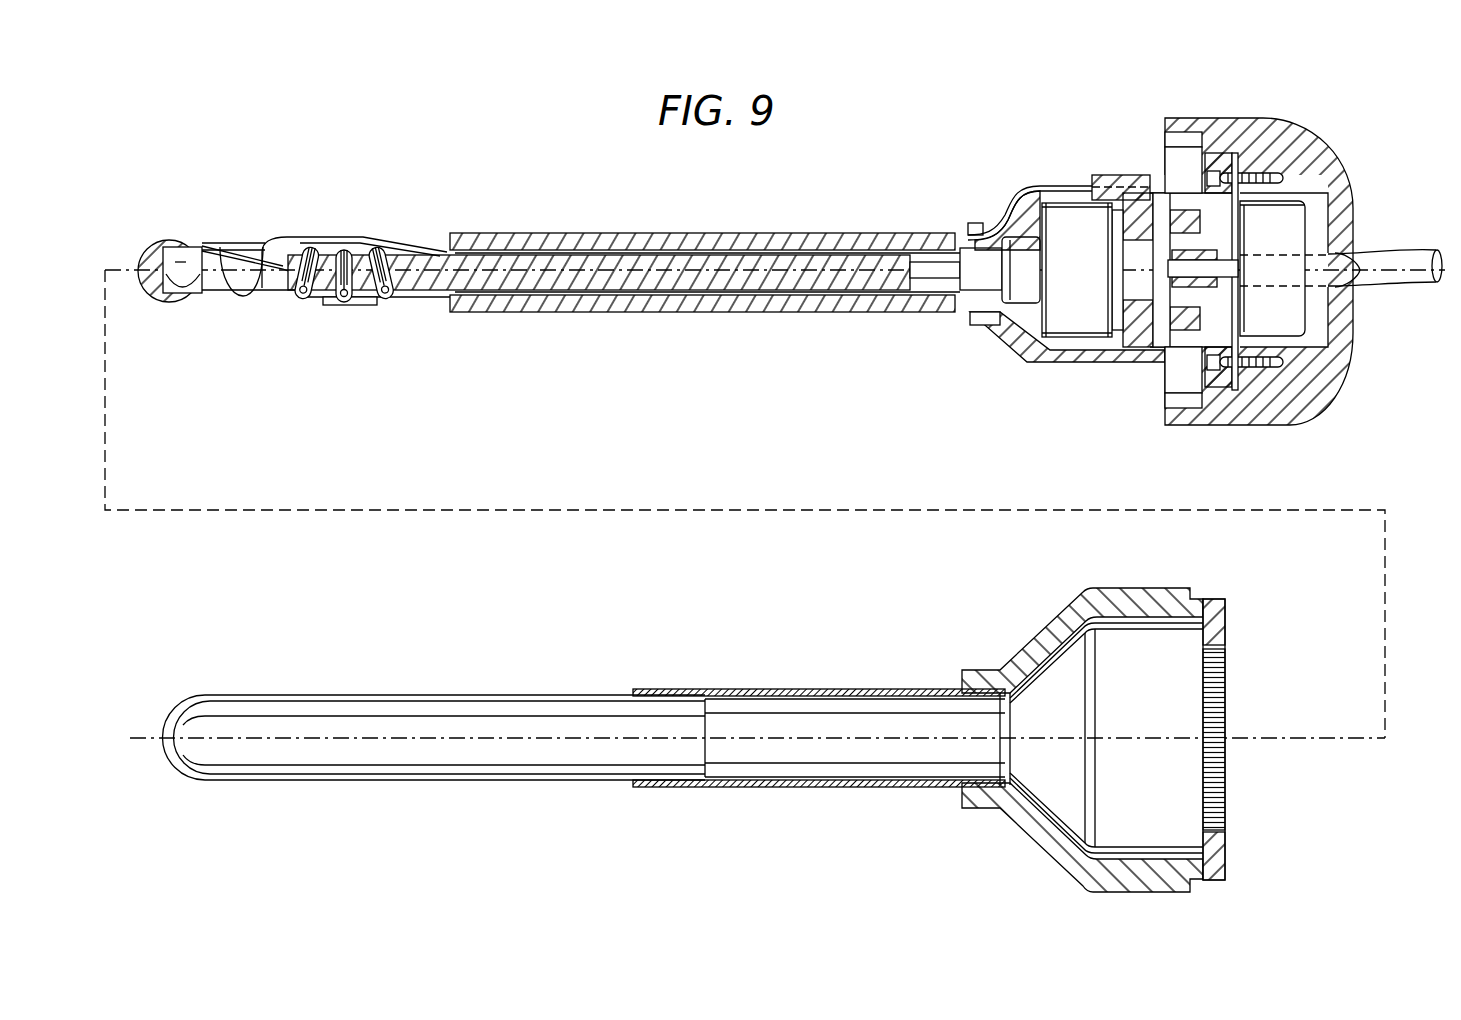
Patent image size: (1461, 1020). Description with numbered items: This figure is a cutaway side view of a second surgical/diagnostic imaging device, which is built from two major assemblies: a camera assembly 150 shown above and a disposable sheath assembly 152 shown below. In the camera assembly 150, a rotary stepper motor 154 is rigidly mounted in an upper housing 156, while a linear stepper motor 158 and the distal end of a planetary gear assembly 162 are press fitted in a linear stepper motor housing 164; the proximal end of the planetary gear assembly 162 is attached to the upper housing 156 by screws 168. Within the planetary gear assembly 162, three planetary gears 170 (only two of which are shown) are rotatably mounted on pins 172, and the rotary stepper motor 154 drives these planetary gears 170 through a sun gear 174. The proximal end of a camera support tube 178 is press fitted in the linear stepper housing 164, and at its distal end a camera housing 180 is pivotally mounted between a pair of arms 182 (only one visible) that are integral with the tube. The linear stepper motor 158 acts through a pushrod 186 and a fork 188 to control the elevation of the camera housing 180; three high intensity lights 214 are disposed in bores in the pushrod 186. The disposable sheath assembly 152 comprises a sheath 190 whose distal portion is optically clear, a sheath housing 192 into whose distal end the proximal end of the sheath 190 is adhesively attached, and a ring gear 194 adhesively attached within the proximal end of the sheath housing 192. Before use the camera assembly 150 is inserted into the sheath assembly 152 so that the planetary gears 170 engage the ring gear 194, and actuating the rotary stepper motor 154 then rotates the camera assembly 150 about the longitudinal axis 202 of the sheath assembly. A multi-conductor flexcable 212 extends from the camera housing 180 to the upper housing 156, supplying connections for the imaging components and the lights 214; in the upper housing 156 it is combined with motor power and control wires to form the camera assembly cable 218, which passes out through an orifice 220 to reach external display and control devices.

The camera assembly 150 is at (644, 362).
The disposable sheath assembly 152 is at (762, 620).
The rotary stepper motor 154 is at (1289, 320).
The upper housing 156 is at (1268, 120).
The linear stepper motor 158 is at (1094, 248).
The planetary gear assembly 162 is at (1158, 370).
The linear stepper motor housing 164 is at (995, 335).
The screws 168 is at (1264, 172).
The planetary gears 170 is at (1182, 172).
The pins 172 is at (1225, 215).
The sun gear 174 is at (1165, 268).
The camera support tube 178 is at (880, 234).
The camera housing 180 is at (180, 240).
The arms 182 is at (268, 296).
The pushrod 186 is at (537, 298).
The fork 188 is at (243, 251).
The sheath 190 is at (889, 694).
The sheath housing 192 is at (1032, 646).
The ring gear 194 is at (1230, 618).
The longitudinal axis 202 is at (161, 738).
The multi-conductor flexcable 212 is at (305, 237).
The high intensity lights 214 is at (303, 298).
The camera assembly cable 218 is at (1374, 290).
The orifice 220 is at (1352, 258).